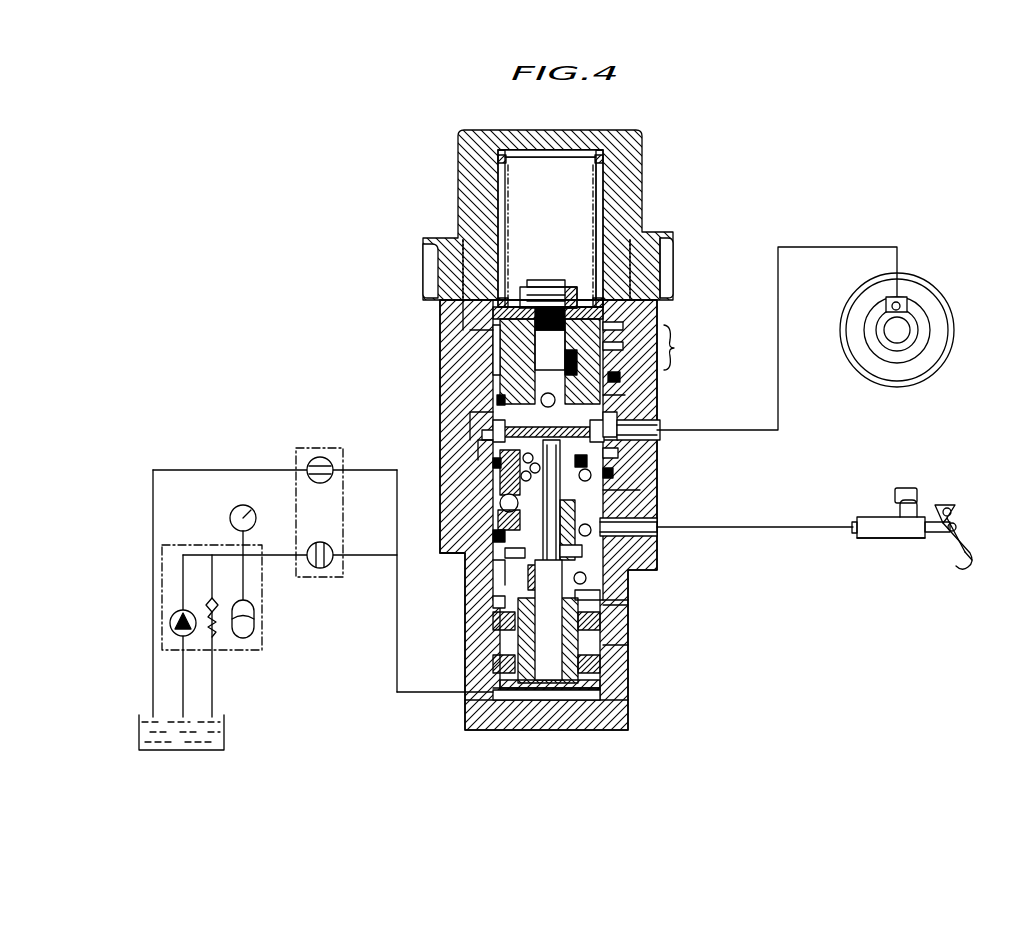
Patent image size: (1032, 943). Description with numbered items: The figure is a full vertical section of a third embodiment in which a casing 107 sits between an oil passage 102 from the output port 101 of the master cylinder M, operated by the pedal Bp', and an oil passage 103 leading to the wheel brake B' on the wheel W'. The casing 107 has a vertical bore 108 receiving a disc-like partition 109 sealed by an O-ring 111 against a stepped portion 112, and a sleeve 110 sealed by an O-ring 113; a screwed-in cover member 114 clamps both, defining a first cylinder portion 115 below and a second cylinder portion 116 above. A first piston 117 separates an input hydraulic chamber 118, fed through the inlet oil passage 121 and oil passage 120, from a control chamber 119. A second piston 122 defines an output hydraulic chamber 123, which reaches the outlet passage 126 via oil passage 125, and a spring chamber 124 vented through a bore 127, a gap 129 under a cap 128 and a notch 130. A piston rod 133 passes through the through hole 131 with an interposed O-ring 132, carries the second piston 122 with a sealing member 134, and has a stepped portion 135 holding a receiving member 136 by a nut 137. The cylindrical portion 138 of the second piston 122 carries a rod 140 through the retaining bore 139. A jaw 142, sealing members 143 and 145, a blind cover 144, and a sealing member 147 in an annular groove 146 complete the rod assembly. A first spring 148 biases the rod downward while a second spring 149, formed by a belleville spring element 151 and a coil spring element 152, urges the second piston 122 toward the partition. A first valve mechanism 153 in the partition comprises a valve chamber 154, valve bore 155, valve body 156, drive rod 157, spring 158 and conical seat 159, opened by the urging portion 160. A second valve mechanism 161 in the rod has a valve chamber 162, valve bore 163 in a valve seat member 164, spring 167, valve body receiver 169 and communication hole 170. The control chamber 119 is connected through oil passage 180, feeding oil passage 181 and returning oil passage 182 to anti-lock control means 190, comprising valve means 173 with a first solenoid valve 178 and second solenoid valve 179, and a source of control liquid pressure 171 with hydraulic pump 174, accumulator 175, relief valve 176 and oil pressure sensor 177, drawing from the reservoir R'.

The output port 101 is at (854, 523).
The oil passage 102 is at (761, 530).
The oil passage 103 is at (778, 337).
The casing 107 is at (440, 389).
The vertical bore 108 is at (610, 606).
The partition 109 is at (618, 492).
The sleeve 110 is at (620, 377).
The O-ring 111 is at (613, 473).
The stepped portion 112 is at (454, 551).
The O-ring 113 is at (625, 396).
The cover member 114 is at (626, 182).
The first cylinder portion 115 is at (605, 692).
The second cylinder portion 116 is at (470, 347).
The first piston 117 is at (604, 648).
The input hydraulic chamber 118 is at (493, 603).
The control chamber 119 is at (546, 707).
The oil passage 120 is at (628, 539).
The inlet oil passage 121 is at (658, 524).
The second piston 122 is at (493, 366).
The output hydraulic chamber 123 is at (470, 422).
The spring chamber 124 is at (533, 210).
The oil passage 125 is at (618, 453).
The outlet passage 126 is at (660, 426).
The bore 127 is at (574, 150).
The cap 128 is at (606, 147).
The gap 129 is at (537, 140).
The notch 130 is at (665, 300).
The through hole 131 is at (560, 492).
The seal 132 is at (580, 468).
The piston rod 133 is at (528, 582).
The sealing member 134 is at (550, 361).
The stepped portion 135 is at (556, 322).
The receiving member 136 is at (516, 298).
The nut 137 is at (561, 287).
The cylindrical portion 138 is at (497, 403).
The retaining bore 139 is at (558, 403).
The rod 140 is at (548, 418).
The jaw 142 is at (490, 621).
The sealing member 143 is at (600, 624).
The blind cover 144 is at (550, 703).
The sealing member 145 is at (600, 666).
The annular groove 146 is at (572, 375).
The sealing member 147 is at (617, 420).
The first spring 148 is at (598, 203).
The second spring 149 is at (684, 347).
The first belleville spring element 151 is at (623, 349).
The second coil spring element 152 is at (623, 328).
The first valve mechanism 153 is at (493, 578).
The valve chamber 154 is at (493, 535).
The valve bore 155 is at (500, 492).
The valve body 156 is at (493, 512).
The drive rod 157 is at (493, 463).
The spring 158 is at (512, 500).
The conical seat 159 is at (528, 472).
The urging portion 160 is at (478, 444).
The second valve mechanism 161 is at (586, 578).
The valve chamber 162 is at (548, 621).
The valve bore 163 is at (587, 532).
The valve seat member 164 is at (572, 512).
The spring 167 is at (585, 597).
The valve body receiver 169 is at (527, 556).
The communication hole 170 is at (568, 553).
The source of control liquid pressure 171 is at (228, 652).
The valve means 173 is at (343, 501).
The hydraulic pump 174 is at (170, 625).
The accumulator 175 is at (254, 626).
The relief valve 176 is at (214, 600).
The oil pressure sensor 177 is at (230, 520).
The first solenoid valve 178 is at (322, 542).
The second solenoid valve 179 is at (322, 457).
The oil passage 180 is at (465, 692).
The feeding oil passage 181 is at (397, 626).
The returning oil passage 182 is at (221, 470).
The anti-lock control means 190 is at (266, 424).
The wheel brake B' is at (905, 283).
The wheel W' is at (910, 334).
The master cylinder M is at (880, 540).
The brake pedal Bp' is at (986, 539).
The reservoir R' is at (199, 732).